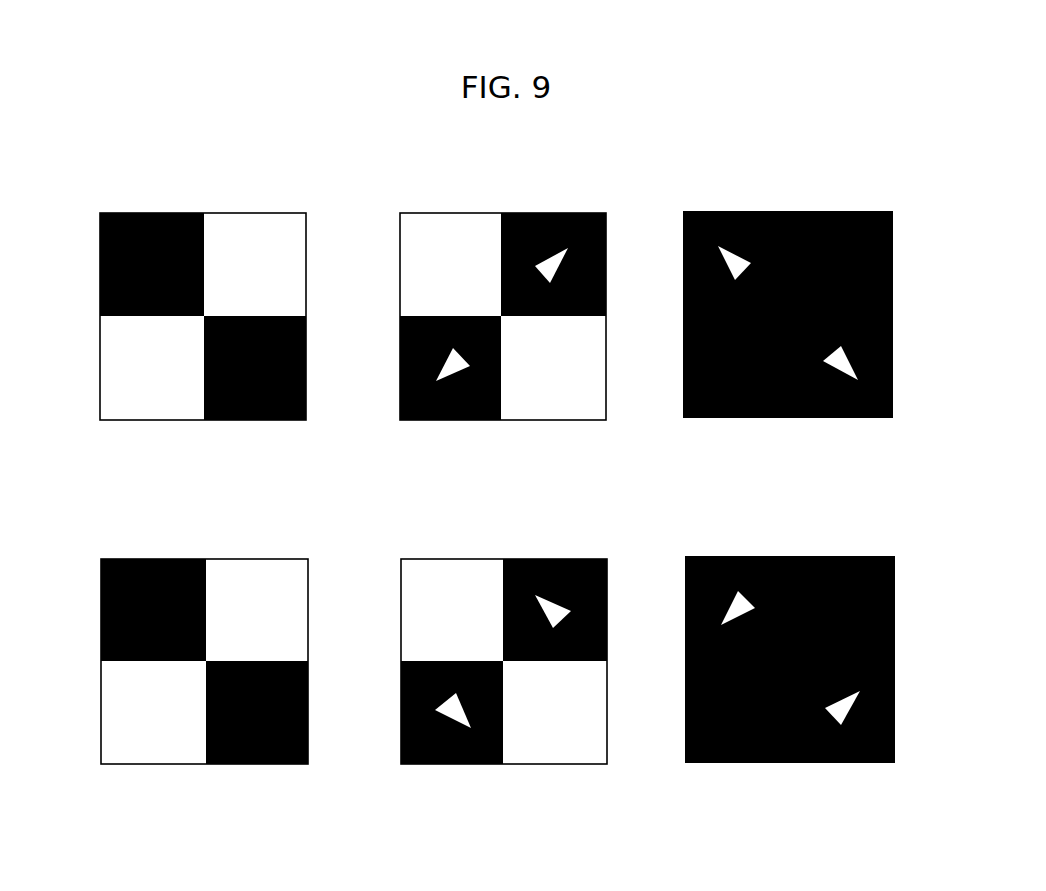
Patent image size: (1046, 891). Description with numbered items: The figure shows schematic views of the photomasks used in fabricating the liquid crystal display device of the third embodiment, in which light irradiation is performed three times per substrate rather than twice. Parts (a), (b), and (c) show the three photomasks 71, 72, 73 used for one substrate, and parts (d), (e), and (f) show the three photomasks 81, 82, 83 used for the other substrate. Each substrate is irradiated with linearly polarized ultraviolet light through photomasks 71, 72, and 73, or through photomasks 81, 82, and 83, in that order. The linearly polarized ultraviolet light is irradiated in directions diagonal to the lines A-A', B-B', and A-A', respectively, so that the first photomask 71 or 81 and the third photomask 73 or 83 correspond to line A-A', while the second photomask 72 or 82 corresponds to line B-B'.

The photomask 71 is at (210, 316).
The photomask 72 is at (503, 316).
The photomask 73 is at (797, 316).
The photomask 81 is at (210, 663).
The photomask 82 is at (503, 663).
The photomask 83 is at (797, 663).